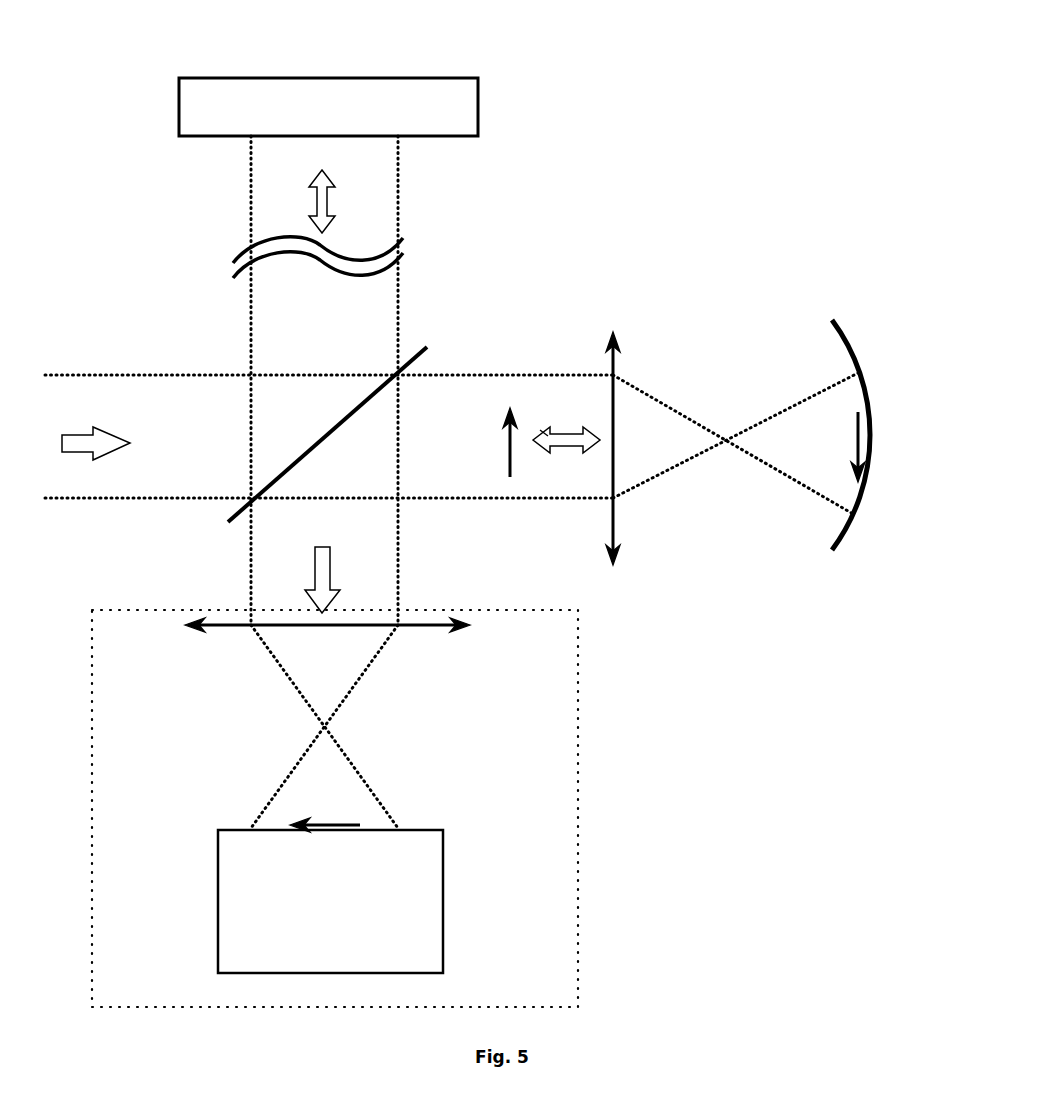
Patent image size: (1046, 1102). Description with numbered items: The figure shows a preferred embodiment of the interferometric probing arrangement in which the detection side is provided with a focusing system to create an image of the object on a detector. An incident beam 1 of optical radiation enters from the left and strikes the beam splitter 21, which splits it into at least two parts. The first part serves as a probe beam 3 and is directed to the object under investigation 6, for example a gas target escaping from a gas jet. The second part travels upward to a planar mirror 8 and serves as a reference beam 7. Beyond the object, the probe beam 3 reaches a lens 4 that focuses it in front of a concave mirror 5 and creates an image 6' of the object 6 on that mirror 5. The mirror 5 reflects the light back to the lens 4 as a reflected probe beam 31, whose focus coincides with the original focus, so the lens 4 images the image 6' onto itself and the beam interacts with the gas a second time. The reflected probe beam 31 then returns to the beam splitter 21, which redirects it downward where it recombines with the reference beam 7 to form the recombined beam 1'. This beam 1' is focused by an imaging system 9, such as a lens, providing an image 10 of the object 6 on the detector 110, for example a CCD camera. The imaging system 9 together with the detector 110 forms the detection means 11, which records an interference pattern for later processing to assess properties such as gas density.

The incident beam 1 is at (104, 370).
The recombined beam 1' is at (223, 581).
The probe beam 3 is at (587, 440).
The reflected probe beam 31 is at (545, 433).
The lens 4 is at (617, 367).
The concave mirror 5 is at (857, 343).
The object under investigation 6 is at (546, 508).
The image of the object 6' is at (907, 496).
The reference beam 7 is at (330, 203).
The planar mirror 8 is at (443, 78).
The imaging system 9 is at (440, 630).
The image of the object 10 is at (327, 820).
The detection means 11 is at (577, 877).
The beam splitter 21 is at (423, 358).
The detector 110 is at (443, 870).